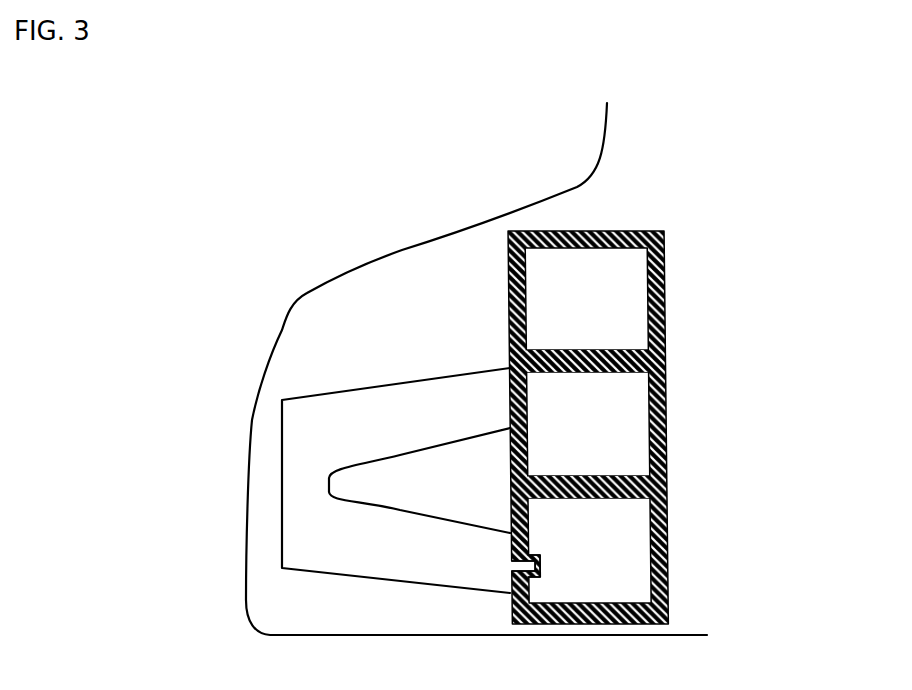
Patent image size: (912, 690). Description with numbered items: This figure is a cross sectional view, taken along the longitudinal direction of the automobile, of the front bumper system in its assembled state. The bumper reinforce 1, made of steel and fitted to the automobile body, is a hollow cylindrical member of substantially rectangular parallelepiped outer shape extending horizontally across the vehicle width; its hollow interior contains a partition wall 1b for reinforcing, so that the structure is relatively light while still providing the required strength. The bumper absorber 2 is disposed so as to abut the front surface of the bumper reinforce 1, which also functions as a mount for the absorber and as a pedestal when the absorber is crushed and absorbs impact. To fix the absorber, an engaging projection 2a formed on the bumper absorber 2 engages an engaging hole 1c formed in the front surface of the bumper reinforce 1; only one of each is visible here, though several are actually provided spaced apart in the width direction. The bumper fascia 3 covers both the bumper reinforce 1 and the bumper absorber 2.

The bumper reinforce 1 is at (630, 230).
The partition wall 1b is at (623, 475).
The engaging hole 1c is at (535, 580).
The bumper absorber 2 is at (312, 412).
The engaging projection 2a is at (537, 566).
The bumper fascia 3 is at (402, 250).